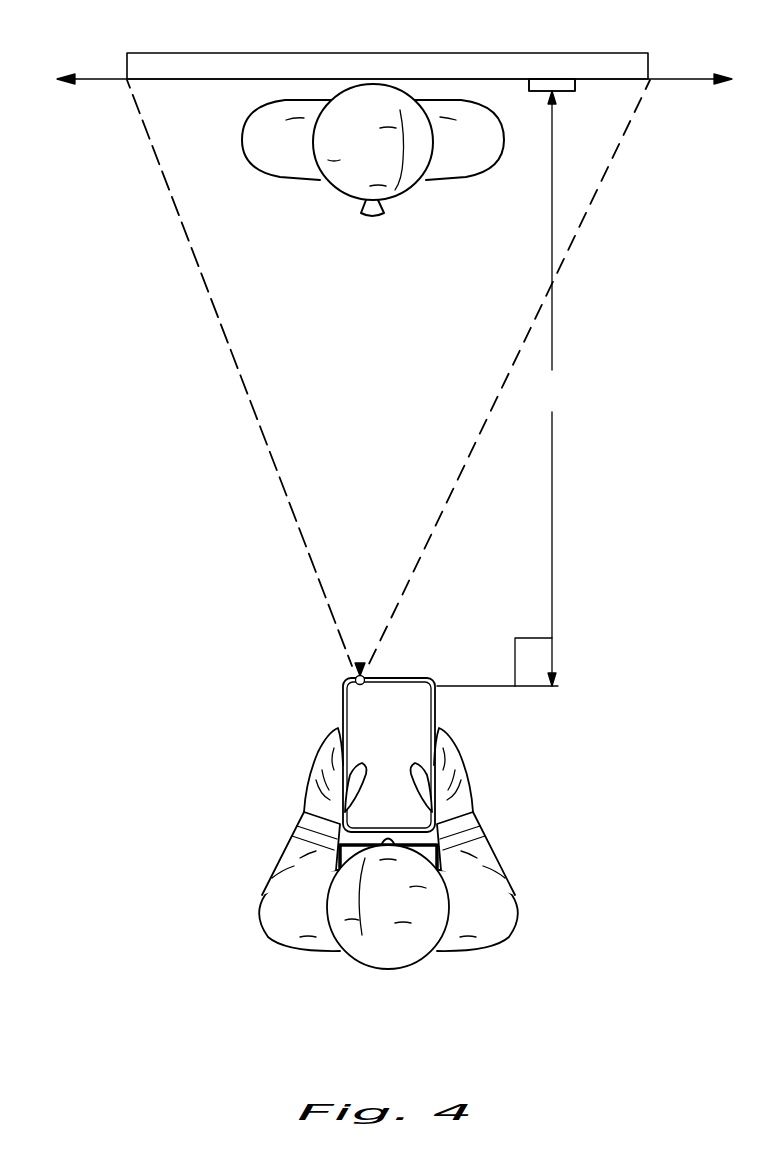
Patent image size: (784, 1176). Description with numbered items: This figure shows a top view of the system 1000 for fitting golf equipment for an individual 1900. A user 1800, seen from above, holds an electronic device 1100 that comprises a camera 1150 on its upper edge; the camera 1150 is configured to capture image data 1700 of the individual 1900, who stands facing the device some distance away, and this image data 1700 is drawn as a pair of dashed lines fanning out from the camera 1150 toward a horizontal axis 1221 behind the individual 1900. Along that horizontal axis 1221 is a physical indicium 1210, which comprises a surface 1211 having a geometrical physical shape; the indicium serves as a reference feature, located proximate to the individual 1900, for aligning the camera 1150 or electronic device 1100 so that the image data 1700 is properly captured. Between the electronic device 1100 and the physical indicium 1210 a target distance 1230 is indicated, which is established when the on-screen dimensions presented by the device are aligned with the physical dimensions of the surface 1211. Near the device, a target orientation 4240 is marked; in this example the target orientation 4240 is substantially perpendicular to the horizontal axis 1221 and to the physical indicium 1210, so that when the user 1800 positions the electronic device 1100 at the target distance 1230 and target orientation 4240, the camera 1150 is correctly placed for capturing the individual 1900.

The system 1000 is at (608, 1025).
The electronic device 1100 is at (413, 715).
The camera 1150 is at (354, 675).
The physical indicium 1210 is at (551, 86).
The surface 1211 is at (565, 92).
The horizontal axis 1221 is at (100, 78).
The target distance 1230 is at (551, 388).
The image data 1700 is at (234, 358).
The user 1800 is at (256, 946).
The individual 1900 is at (332, 202).
The target orientation 4240 is at (527, 651).